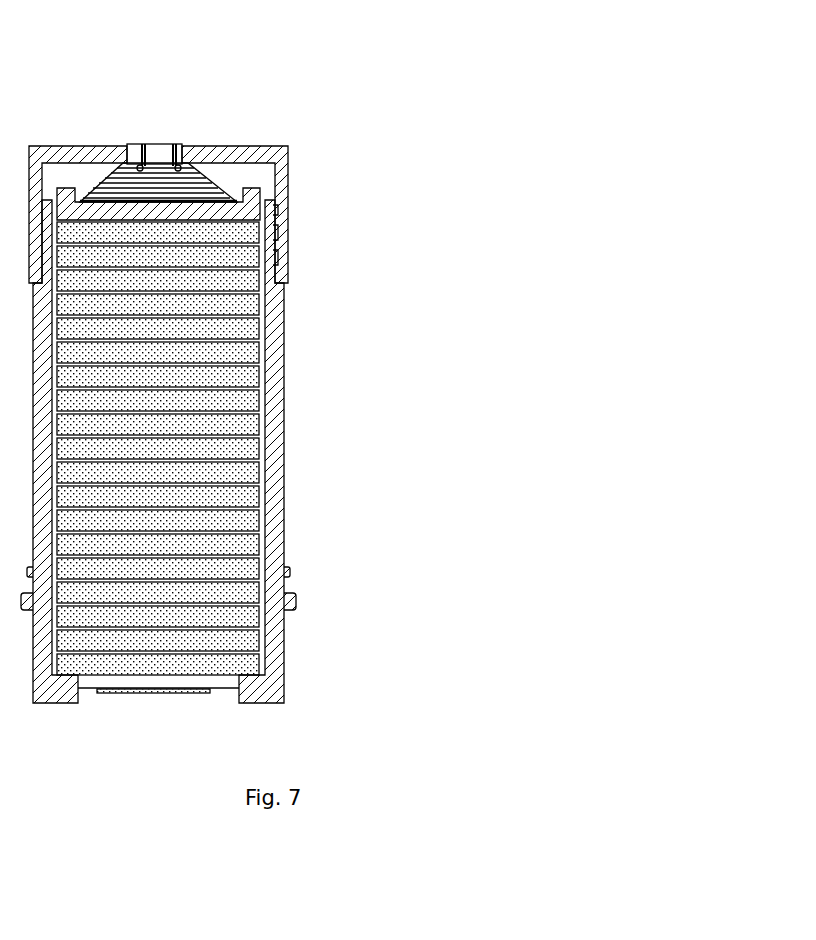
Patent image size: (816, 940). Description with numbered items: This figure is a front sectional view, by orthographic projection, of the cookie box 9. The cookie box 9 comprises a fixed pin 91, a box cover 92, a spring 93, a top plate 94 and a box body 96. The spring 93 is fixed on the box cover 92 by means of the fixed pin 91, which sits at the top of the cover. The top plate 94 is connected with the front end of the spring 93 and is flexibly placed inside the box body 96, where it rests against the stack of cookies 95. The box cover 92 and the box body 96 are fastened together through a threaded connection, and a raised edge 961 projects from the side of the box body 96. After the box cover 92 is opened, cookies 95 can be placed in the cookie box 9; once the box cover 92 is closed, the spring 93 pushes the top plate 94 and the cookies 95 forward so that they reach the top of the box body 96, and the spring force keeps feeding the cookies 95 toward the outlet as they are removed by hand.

The cookie box 9 is at (492, 25).
The fixed pin 91 is at (162, 153).
The box cover 92 is at (277, 163).
The spring 93 is at (212, 205).
The top plate 94 is at (163, 213).
The cookies 95 is at (242, 375).
The box body 96 is at (272, 500).
The raised edge 961 is at (290, 595).